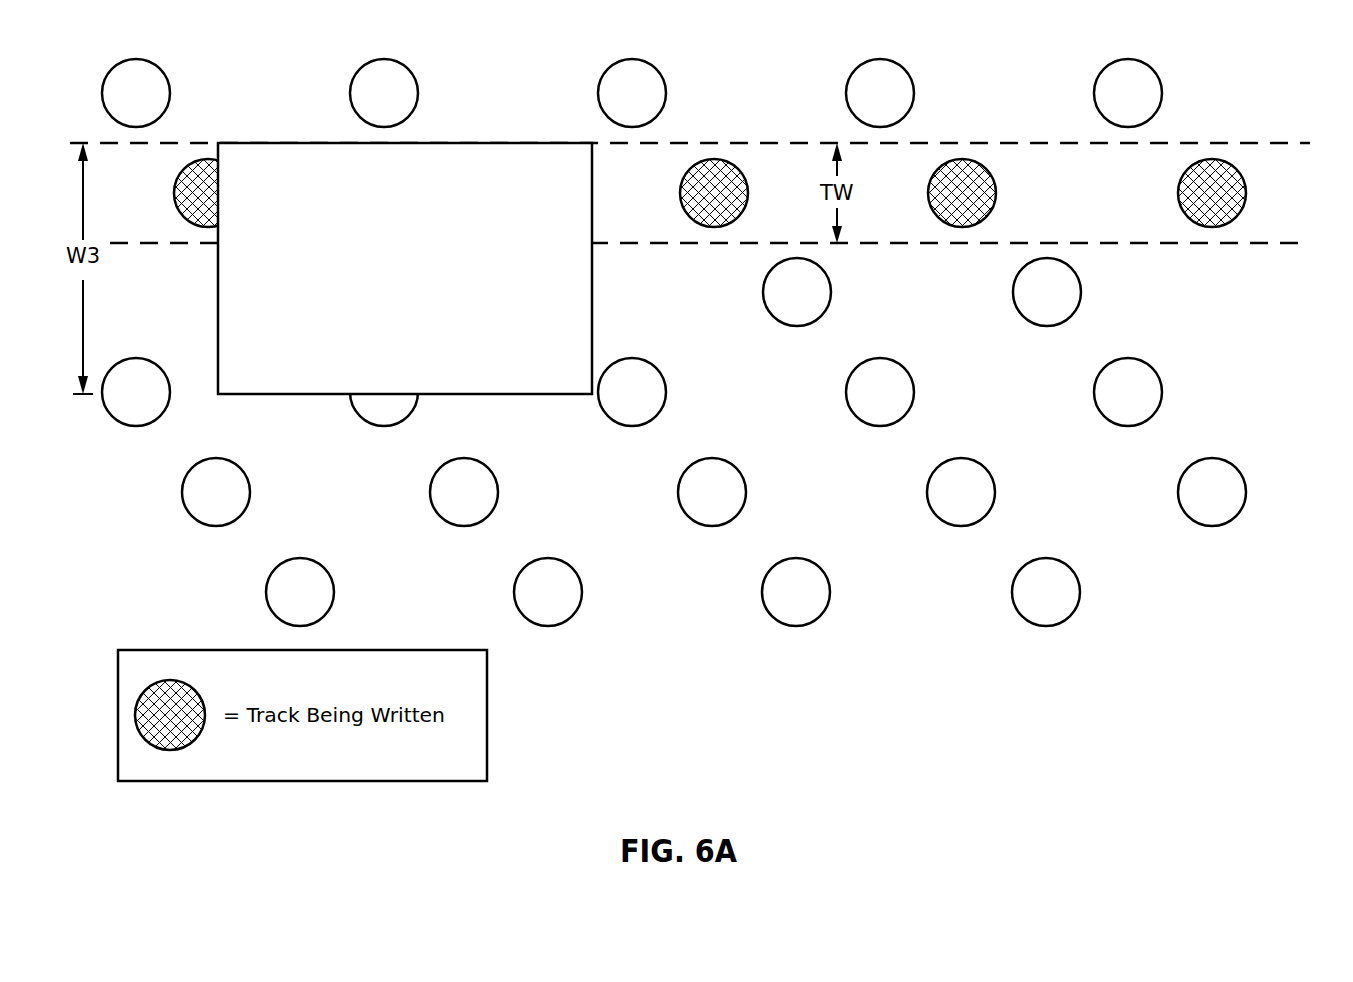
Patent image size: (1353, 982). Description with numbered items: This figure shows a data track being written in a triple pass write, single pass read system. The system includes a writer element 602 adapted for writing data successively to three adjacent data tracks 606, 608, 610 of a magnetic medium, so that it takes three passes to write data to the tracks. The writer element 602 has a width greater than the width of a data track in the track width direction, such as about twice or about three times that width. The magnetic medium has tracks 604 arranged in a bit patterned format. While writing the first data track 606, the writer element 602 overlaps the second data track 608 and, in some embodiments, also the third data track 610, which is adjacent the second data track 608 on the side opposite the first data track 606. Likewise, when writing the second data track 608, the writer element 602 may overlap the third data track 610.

The writer element 602 is at (425, 281).
The tracks 604 is at (1236, 96).
The first data track 606 is at (1283, 191).
The second data track 608 is at (1263, 298).
The third data track 610 is at (1268, 404).